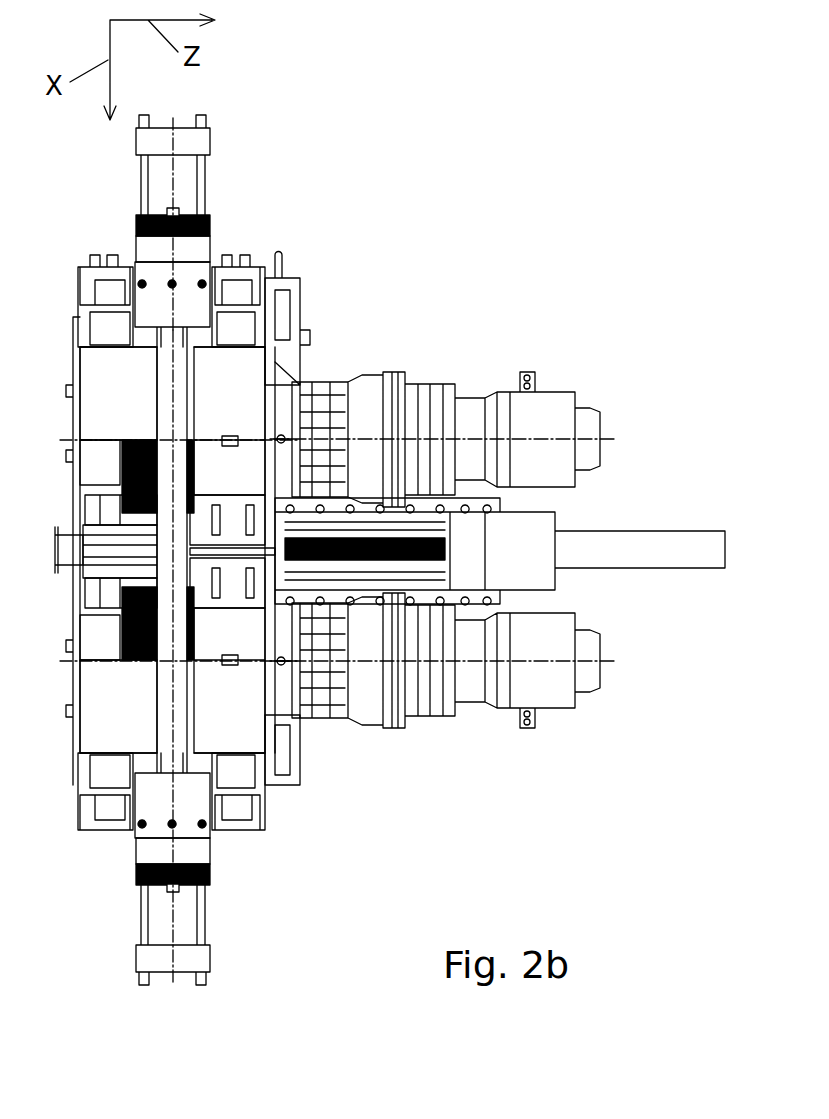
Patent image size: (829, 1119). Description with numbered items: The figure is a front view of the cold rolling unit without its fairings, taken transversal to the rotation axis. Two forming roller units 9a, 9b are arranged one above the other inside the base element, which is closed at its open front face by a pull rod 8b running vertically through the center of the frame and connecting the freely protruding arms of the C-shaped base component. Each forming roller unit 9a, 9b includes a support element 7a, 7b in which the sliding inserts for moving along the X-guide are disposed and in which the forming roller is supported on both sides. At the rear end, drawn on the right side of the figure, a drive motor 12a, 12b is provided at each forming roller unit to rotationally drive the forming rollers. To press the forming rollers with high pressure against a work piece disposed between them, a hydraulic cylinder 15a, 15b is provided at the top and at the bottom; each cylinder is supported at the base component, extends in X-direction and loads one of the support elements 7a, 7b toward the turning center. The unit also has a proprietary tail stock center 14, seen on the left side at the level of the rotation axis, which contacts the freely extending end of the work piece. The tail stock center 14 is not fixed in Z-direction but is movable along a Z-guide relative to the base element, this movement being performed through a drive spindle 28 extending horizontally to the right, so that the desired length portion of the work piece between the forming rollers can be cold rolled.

The support element 7a is at (118, 393).
The support element 7b is at (118, 706).
The pull rod 8b is at (172, 550).
The forming roller unit 9a is at (229, 421).
The forming roller unit 9b is at (229, 680).
The drive motor 12a is at (486, 354).
The drive motor 12b is at (467, 758).
The tail stock center 14 is at (52, 550).
The hydraulic cylinder 15a is at (182, 183).
The hydraulic cylinder 15b is at (183, 922).
The drive spindle 28 is at (445, 540).